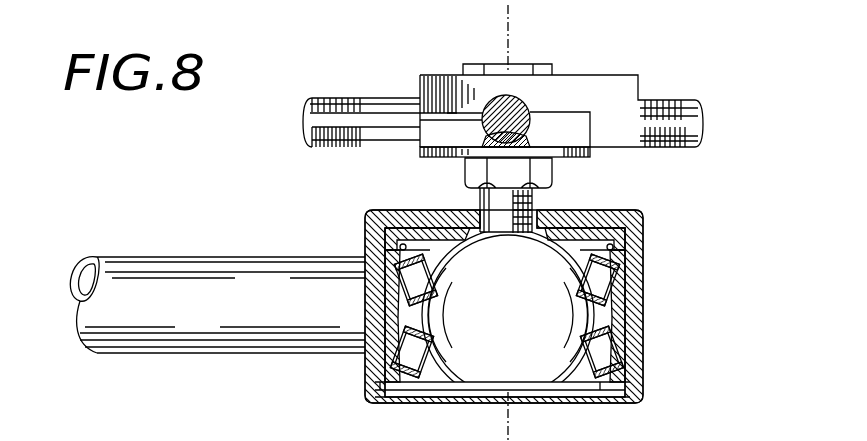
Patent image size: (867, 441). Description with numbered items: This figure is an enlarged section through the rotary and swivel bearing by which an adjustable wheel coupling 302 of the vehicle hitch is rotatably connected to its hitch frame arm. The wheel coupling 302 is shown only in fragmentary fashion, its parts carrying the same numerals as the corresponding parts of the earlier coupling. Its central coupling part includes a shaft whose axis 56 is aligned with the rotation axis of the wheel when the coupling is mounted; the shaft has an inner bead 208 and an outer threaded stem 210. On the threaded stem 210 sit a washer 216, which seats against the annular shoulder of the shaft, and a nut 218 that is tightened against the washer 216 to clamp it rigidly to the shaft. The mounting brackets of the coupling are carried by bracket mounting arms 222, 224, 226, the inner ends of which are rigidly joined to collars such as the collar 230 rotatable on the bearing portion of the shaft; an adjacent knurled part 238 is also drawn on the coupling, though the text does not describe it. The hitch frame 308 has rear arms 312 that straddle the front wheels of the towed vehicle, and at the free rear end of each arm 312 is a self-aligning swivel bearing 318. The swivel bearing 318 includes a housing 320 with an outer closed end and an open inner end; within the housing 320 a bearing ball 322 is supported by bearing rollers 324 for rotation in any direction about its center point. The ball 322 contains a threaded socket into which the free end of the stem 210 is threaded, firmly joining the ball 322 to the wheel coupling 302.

The axis 56 is at (514, 16).
The bead 208 is at (518, 67).
The threaded stem 210 is at (536, 208).
The washer 216 is at (418, 153).
The nut 218 is at (468, 168).
The bracket mounting arm 222 is at (680, 108).
The bracket mounting arm 224 is at (329, 106).
The bracket mounting arm 226 is at (524, 130).
The collar 230 is at (425, 126).
The knurled head 238 is at (442, 78).
The wheel coupling 302 is at (600, 66).
The hitch frame 308 is at (108, 352).
The rear frame arm 312 is at (141, 257).
The self-aligning swivel bearing 318 is at (643, 363).
The bearing housing 320 is at (378, 382).
The bearing ball 322 is at (524, 352).
The bearing rollers 324 is at (405, 266).